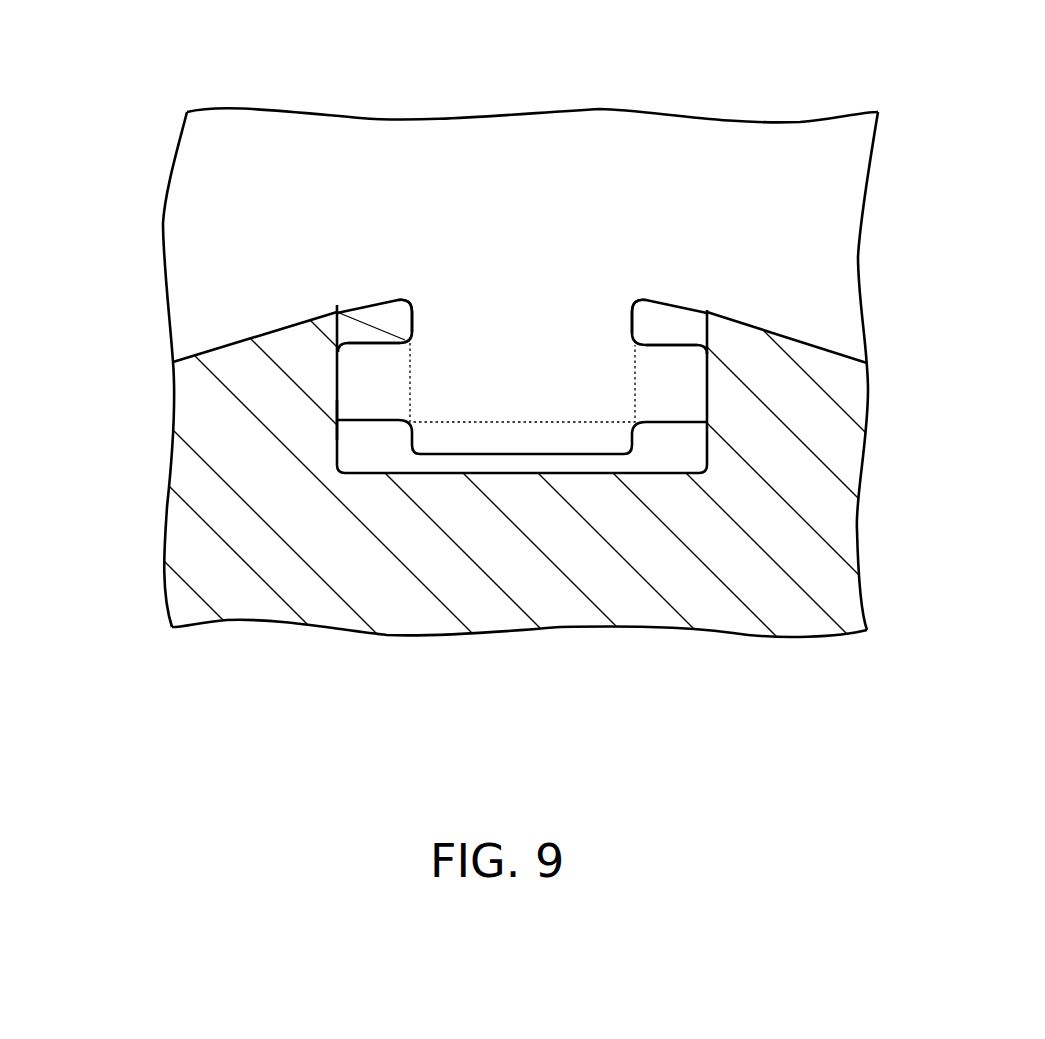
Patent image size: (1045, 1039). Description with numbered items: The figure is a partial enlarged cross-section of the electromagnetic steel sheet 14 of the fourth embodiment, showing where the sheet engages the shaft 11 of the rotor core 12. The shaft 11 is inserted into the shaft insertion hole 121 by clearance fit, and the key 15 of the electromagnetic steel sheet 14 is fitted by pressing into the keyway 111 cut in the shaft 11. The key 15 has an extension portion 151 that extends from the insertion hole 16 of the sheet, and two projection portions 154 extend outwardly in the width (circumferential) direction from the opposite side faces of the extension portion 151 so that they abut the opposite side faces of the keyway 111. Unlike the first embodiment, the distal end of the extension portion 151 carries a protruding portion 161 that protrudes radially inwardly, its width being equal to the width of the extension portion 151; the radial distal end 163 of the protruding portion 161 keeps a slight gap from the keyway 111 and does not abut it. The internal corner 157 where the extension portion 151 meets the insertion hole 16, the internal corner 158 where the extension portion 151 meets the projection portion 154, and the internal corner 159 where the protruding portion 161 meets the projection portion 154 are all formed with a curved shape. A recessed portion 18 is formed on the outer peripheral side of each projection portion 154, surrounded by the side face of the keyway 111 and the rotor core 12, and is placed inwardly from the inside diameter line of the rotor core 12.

The shaft 11 is at (783, 620).
The rotor core 12 is at (607, 105).
The electromagnetic steel sheet 14 is at (635, 155).
The key 15 is at (687, 325).
The insertion hole 16 is at (183, 333).
The shaft insertion hole 121 is at (208, 355).
The recessed portion 18 is at (347, 303).
The keyway 111 is at (340, 430).
The extension portion 151 is at (570, 385).
The projection portions 154 is at (377, 393).
The internal corner 157 is at (366, 318).
The internal corner 158 is at (340, 308).
The internal corner 159 is at (407, 425).
The protruding portion 161 is at (513, 445).
The radial distal end 163 is at (560, 456).